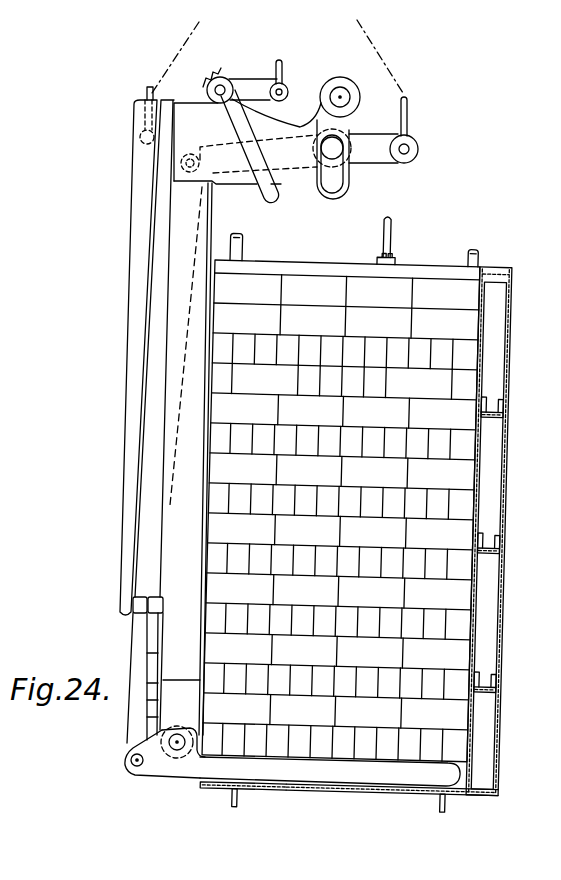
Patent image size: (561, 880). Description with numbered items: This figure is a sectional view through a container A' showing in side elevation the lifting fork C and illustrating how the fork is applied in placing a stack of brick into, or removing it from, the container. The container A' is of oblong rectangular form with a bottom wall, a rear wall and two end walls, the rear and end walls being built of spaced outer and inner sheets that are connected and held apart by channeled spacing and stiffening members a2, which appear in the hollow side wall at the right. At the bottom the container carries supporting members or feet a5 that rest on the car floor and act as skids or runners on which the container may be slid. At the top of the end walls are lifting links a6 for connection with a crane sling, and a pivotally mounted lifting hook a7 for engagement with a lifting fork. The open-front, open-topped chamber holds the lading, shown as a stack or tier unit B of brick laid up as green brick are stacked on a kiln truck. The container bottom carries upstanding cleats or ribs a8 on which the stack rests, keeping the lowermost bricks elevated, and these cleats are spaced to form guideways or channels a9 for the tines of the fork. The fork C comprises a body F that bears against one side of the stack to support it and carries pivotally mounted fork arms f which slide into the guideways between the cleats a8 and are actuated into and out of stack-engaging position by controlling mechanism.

The container A' is at (498, 513).
The spacing and stiffening members a2 is at (493, 688).
The supporting members or feet a5 is at (230, 798).
The lifting links a6 is at (242, 249).
The lifting hooks a7 is at (382, 234).
The supporting and guiding cleats or ribs a8 is at (395, 788).
The guideways or channels a9 is at (305, 788).
The stack or tier unit of brick B is at (441, 333).
The fork C is at (183, 456).
The body F is at (192, 368).
The fork arms f is at (331, 760).